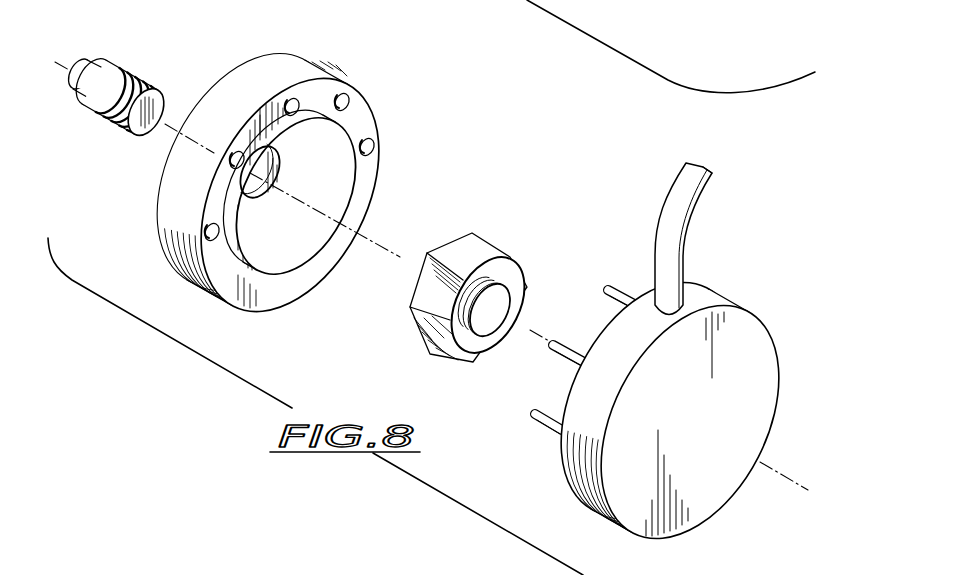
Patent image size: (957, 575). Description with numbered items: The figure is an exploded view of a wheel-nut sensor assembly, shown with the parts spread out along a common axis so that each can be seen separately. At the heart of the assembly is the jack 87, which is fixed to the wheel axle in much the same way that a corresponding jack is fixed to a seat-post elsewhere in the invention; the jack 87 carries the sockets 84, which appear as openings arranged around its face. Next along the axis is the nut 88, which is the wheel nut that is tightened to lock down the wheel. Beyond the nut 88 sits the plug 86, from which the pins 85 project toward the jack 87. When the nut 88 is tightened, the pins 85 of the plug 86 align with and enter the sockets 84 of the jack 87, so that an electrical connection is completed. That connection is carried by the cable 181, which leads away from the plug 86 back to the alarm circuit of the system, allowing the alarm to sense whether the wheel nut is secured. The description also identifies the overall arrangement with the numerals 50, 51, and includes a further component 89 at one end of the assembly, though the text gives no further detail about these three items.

The connector assembly 50 is at (489, 144).
The connector assembly 51 is at (514, 175).
The sockets 84 is at (228, 158).
The pins 85 is at (623, 292).
The plug 86 is at (680, 365).
The jack 87 is at (257, 174).
The nut 88 is at (487, 253).
The plug 89 is at (112, 72).
The cable 181 is at (676, 238).